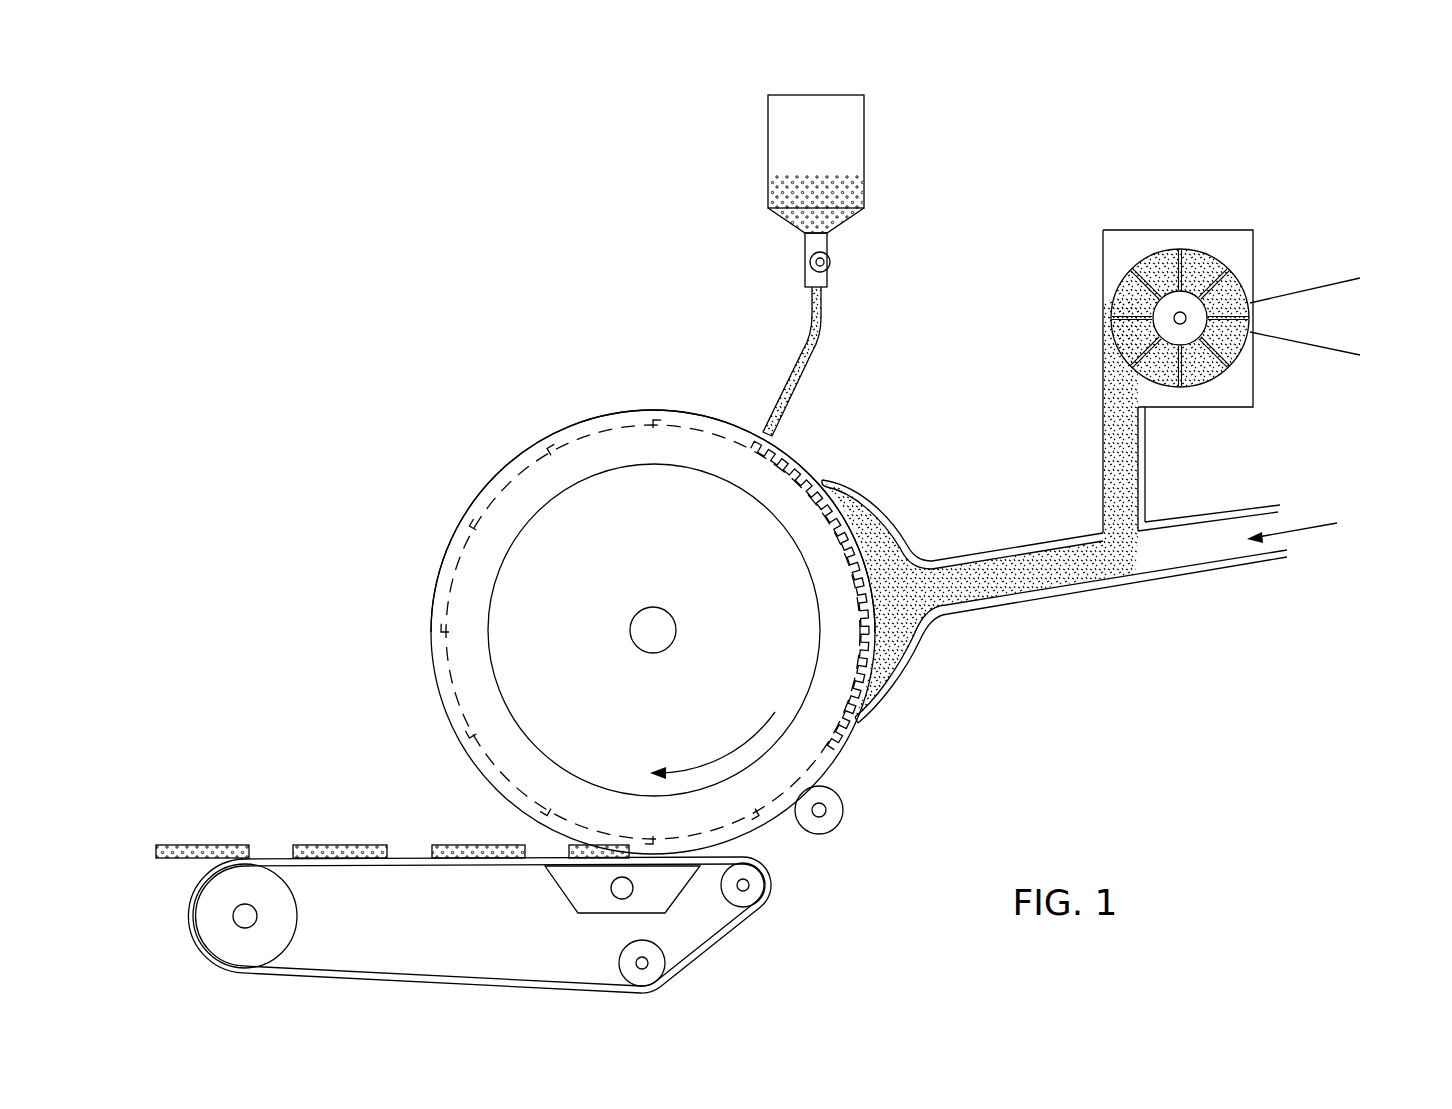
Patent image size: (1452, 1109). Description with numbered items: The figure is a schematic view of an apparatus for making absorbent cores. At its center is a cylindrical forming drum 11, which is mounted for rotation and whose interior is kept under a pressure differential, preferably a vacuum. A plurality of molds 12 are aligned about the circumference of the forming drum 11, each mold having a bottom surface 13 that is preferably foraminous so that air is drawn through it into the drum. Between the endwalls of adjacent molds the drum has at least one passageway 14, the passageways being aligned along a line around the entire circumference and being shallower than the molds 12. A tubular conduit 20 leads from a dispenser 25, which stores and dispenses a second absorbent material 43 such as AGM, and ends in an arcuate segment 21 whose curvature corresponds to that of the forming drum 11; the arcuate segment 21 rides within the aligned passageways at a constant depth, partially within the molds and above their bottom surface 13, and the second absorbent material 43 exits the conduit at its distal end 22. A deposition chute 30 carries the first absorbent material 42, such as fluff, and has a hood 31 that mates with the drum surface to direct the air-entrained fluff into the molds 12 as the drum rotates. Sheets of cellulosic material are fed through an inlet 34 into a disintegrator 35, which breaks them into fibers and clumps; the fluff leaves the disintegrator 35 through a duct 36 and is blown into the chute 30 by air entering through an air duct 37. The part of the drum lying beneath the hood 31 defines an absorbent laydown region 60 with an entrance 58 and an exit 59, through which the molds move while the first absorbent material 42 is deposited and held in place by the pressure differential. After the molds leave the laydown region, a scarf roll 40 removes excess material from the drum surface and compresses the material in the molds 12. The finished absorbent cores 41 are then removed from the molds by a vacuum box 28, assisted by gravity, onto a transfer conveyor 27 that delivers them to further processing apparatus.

The forming drum 11 is at (626, 597).
The molds 12 is at (626, 592).
The bottom surface 13 is at (557, 445).
The passageway 14 is at (628, 410).
The tubular conduit 20 is at (800, 378).
The arcuate segment 21 is at (802, 462).
The distal end 22 is at (838, 748).
The dispenser 25 is at (864, 150).
The transfer conveyor 27 is at (725, 930).
The vacuum box 28 is at (583, 890).
The deposition chute 30 is at (1054, 597).
The hood 31 is at (898, 513).
The inlet 34 is at (1332, 312).
The disintegrator 35 is at (1183, 250).
The duct 36 is at (1143, 464).
The air duct 37 is at (1181, 583).
The scarf roll 40 is at (833, 823).
The absorbent cores 41 is at (323, 845).
The first absorbent material 42 is at (1043, 573).
The second absorbent material 43 is at (828, 223).
The entrance 58 is at (832, 474).
The exit 59 is at (862, 727).
The absorbent laydown region 60 is at (683, 630).